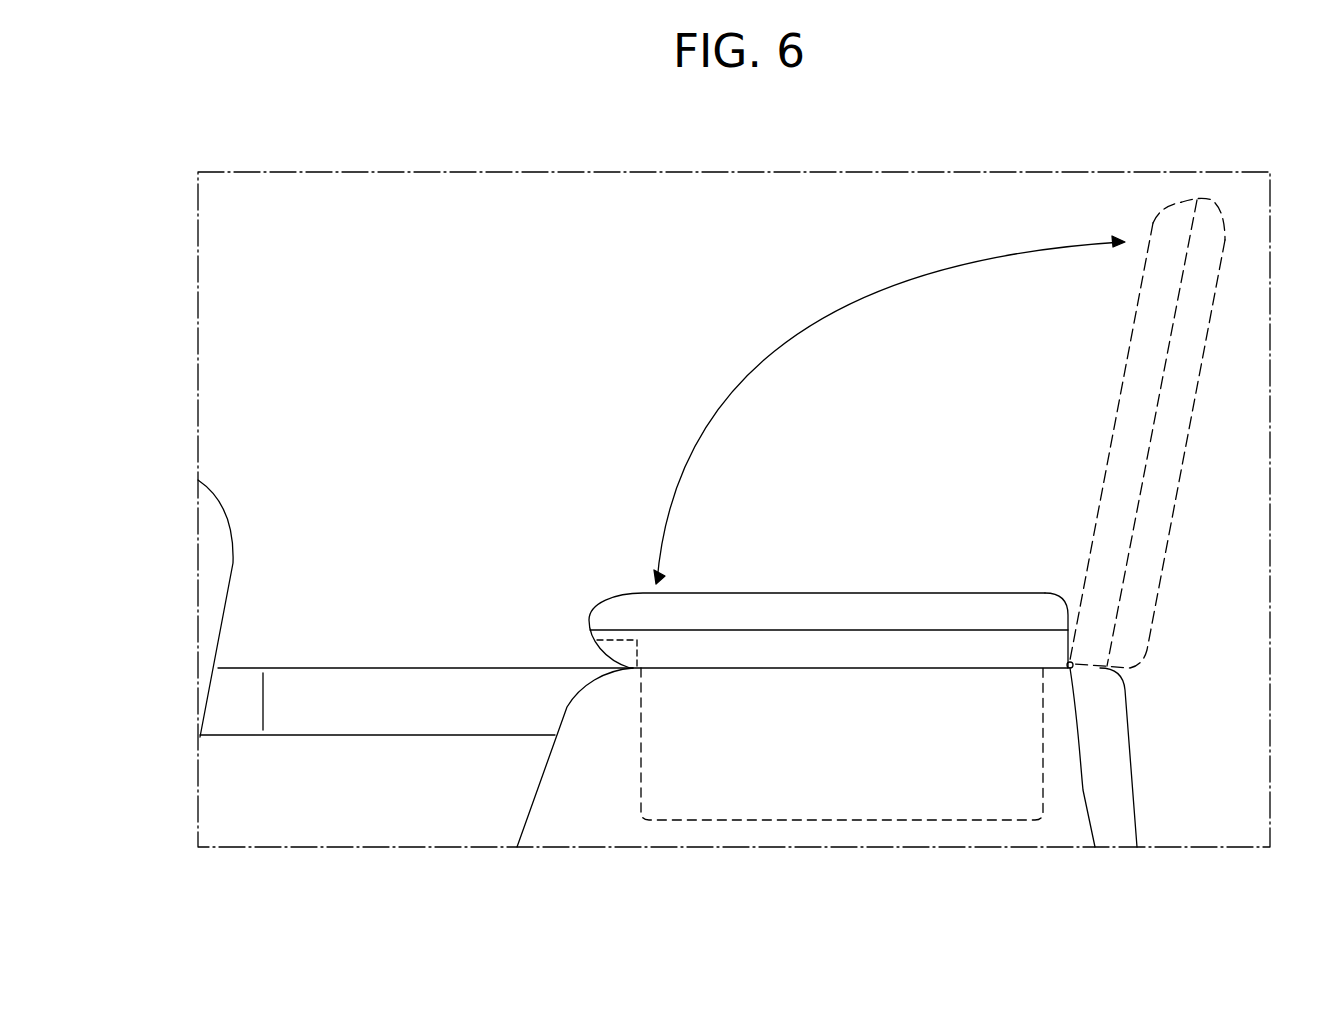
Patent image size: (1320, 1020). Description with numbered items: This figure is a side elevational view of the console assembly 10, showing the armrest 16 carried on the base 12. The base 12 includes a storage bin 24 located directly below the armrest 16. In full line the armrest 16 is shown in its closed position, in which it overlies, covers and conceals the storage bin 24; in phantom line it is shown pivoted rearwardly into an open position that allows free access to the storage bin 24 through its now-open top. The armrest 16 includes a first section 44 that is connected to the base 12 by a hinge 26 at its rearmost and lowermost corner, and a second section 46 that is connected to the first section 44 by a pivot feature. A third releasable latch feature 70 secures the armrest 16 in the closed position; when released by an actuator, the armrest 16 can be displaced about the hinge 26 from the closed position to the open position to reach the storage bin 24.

The console assembly 10 is at (1022, 153).
The base 12 is at (577, 808).
The armrest 16 is at (866, 480).
The storage bin 24 is at (833, 820).
The hinge 26 is at (1092, 840).
The first section 44 is at (788, 650).
The second section 46 is at (647, 592).
The third releasable latch feature 70 is at (617, 653).